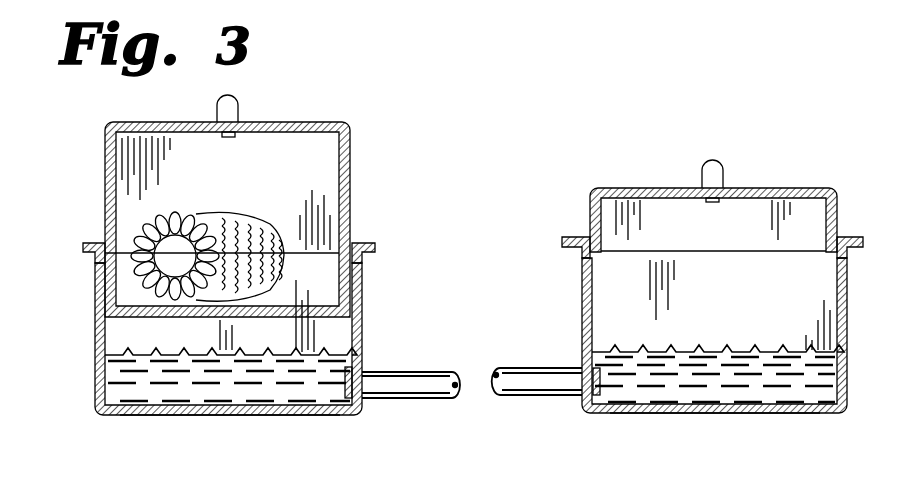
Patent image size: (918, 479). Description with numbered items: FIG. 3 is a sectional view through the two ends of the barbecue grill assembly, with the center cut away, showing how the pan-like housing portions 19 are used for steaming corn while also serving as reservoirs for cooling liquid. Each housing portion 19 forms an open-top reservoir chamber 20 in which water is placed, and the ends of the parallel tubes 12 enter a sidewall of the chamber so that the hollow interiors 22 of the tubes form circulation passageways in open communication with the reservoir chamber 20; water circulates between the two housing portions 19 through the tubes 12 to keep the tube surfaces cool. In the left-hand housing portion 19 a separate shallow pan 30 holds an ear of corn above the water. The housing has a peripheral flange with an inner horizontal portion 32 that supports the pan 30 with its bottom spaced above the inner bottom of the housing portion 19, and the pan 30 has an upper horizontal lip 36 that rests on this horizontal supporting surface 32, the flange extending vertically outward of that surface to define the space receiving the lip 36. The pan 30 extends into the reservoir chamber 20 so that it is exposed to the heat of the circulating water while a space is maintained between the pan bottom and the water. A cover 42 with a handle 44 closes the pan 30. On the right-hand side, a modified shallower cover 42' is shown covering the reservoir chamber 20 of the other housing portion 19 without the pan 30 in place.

The tubes 12 is at (538, 398).
The housing portion 19 is at (316, 418).
The reservoir chamber 20 is at (128, 338).
The hollow interiors 22 is at (345, 383).
The pan 30 is at (277, 320).
The inner horizontal portion 32 is at (365, 266).
The upper horizontal lip 36 is at (344, 249).
The cover 42 is at (273, 219).
The modified shallower cover 42' is at (713, 188).
The handle 44 is at (238, 100).